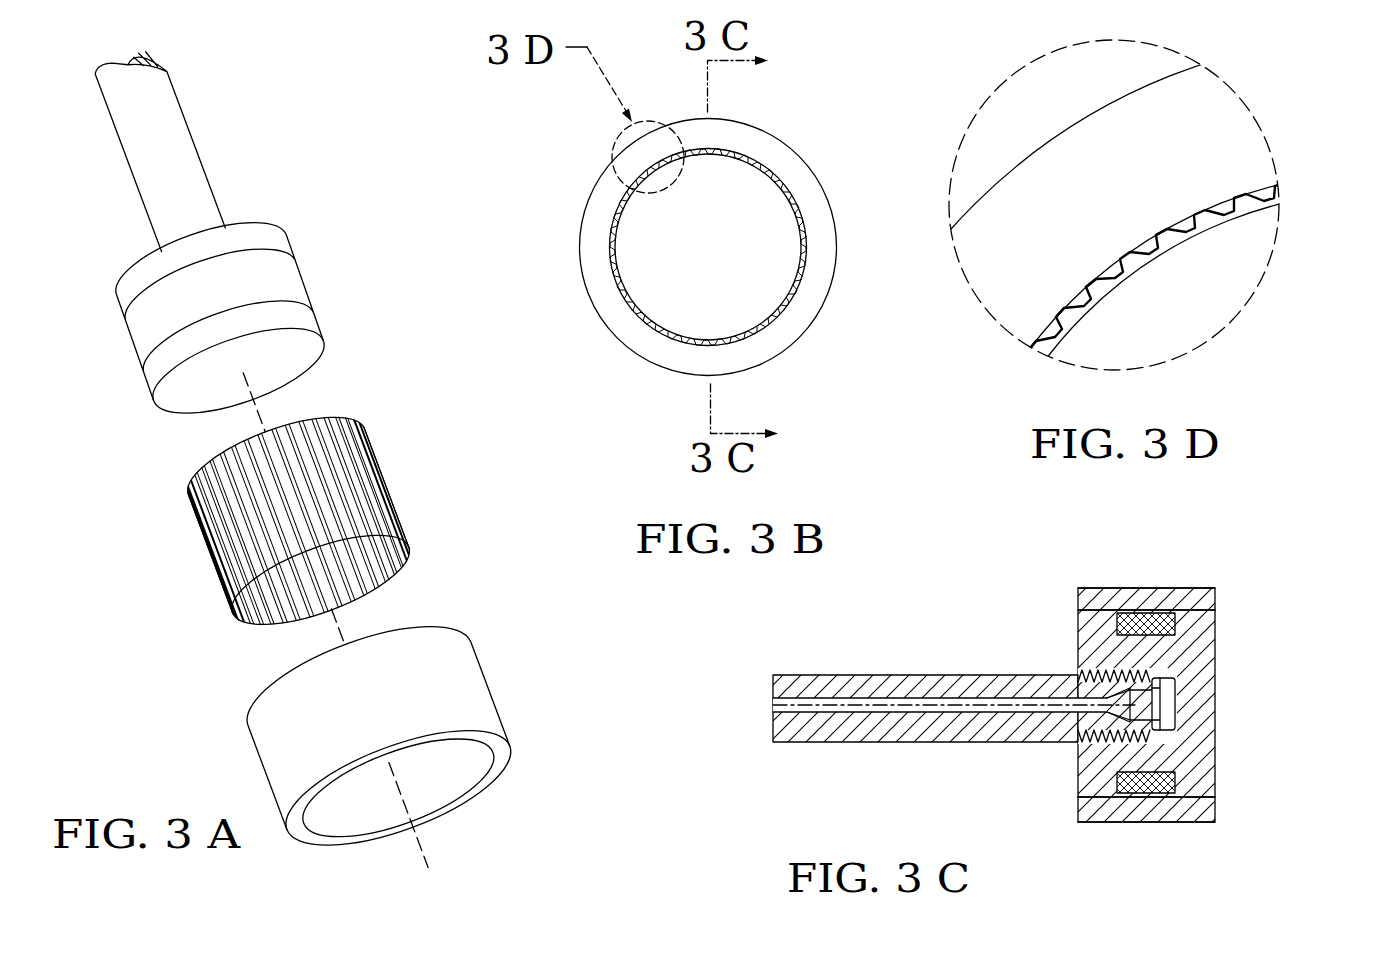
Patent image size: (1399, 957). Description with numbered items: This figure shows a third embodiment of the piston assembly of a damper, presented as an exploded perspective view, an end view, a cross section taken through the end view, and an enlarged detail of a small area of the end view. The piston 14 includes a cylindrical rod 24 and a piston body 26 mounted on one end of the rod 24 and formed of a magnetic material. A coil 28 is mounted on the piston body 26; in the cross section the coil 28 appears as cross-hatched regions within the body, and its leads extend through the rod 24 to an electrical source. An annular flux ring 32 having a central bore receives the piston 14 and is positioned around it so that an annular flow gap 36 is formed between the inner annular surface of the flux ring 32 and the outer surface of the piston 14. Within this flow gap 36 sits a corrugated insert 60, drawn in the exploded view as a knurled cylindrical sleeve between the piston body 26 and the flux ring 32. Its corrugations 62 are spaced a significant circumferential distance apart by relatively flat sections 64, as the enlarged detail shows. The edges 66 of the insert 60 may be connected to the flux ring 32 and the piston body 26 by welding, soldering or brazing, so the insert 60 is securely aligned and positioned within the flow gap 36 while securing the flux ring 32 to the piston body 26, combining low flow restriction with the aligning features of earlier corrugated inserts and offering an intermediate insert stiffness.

In FIG. 3A, the piston 14 is at (308, 277).
In FIG. 3C, the cylindrical rod 24 is at (860, 680).
In FIG. 3D, the piston body 26 is at (1220, 282).
In FIG. 3C, the piston body 26 is at (1200, 637).
In FIG. 3C, the coil 28 is at (1143, 796).
In FIG. 3A, the annular flux ring 32 is at (478, 688).
In FIG. 3D, the annular flux ring 32 is at (1218, 110).
In FIG. 3C, the annular flux ring 32 is at (1103, 810).
In FIG. 3D, the annular flow gap 36 is at (1265, 203).
In FIG. 3A, the corrugated insert 60 is at (390, 486).
In FIG. 3D, the corrugated insert 60 is at (1263, 190).
In FIG. 3A, the corrugations 62 is at (218, 563).
In FIG. 3D, the corrugations 62 is at (1070, 302).
In FIG. 3D, the relatively flat sections 64 is at (1045, 333).
In FIG. 3D, the edges 66 is at (1087, 277).